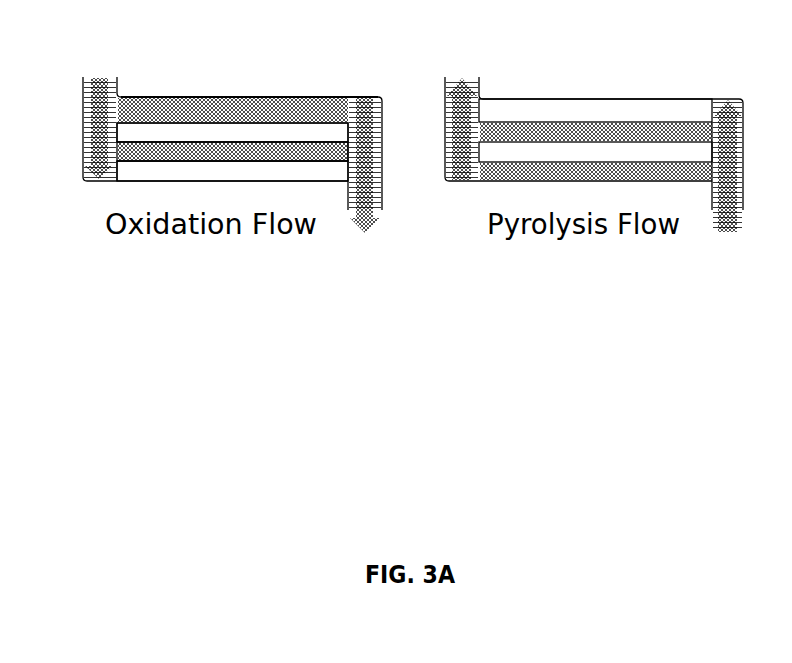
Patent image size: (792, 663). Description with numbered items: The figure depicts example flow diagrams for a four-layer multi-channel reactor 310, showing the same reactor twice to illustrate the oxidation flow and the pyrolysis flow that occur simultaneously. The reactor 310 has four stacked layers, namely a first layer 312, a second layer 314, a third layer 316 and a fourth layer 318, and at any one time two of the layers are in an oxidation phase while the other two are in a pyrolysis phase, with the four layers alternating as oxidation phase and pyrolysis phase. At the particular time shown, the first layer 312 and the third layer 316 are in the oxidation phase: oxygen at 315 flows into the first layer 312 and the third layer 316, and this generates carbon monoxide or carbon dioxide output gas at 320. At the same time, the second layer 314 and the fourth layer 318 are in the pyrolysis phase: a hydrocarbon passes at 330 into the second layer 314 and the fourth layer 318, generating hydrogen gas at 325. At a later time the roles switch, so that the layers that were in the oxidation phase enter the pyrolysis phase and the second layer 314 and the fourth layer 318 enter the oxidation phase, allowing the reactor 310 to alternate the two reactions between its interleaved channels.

The reactor 310 is at (198, 84).
The layer 1 312 is at (263, 97).
The layer 2 314 is at (290, 133).
The layer 3 316 is at (325, 162).
The layer 4 318 is at (345, 168).
The oxygen inflow 315 is at (96, 53).
The CO or CO2 output gas 320 is at (363, 258).
The H2 output 325 is at (459, 52).
The hydrocarbon inflow 330 is at (730, 232).